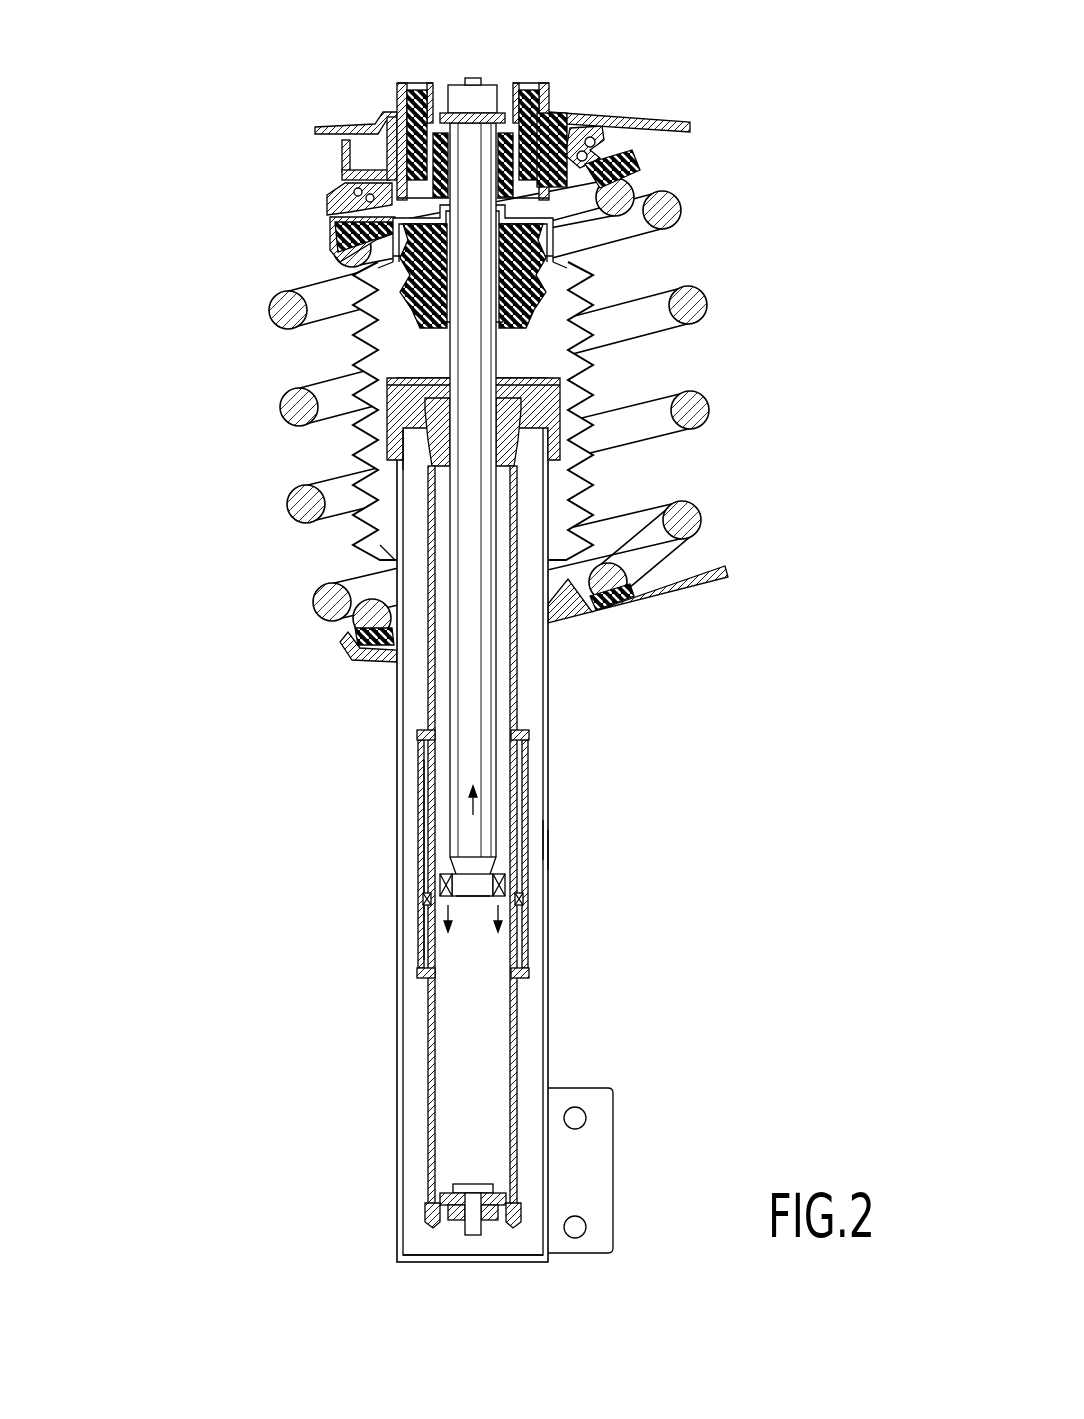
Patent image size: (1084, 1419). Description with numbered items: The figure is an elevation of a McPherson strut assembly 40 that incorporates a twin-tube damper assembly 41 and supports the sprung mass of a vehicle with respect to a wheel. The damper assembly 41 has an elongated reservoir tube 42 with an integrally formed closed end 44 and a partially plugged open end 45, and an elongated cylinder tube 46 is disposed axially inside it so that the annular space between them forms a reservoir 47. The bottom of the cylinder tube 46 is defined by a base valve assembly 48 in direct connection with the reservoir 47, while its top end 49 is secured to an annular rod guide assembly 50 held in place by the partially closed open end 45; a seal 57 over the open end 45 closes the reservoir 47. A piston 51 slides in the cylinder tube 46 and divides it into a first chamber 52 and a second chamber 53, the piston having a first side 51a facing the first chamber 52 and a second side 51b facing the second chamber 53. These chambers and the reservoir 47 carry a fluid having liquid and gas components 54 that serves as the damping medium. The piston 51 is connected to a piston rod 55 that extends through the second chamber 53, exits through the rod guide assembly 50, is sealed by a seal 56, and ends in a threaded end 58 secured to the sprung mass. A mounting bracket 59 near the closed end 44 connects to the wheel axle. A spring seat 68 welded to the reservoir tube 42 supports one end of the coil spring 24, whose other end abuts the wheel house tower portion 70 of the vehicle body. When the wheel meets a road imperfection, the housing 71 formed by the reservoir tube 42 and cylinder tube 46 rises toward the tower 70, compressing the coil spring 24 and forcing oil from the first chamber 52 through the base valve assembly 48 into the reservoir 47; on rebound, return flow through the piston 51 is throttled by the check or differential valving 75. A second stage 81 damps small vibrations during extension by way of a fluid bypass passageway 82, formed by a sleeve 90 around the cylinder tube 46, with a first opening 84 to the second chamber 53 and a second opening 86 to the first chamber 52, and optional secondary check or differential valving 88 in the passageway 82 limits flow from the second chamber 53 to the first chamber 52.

The coil spring 24 is at (705, 302).
The McPherson strut assembly 40 is at (343, 328).
The twin-tube damper assembly 41 is at (562, 850).
The reservoir tube 42 is at (548, 840).
The closed end 44 is at (440, 1262).
The open end 45 is at (410, 437).
The cylinder tube 46 is at (513, 645).
The reservoir 47 is at (413, 660).
The base valve assembly 48 is at (430, 1215).
The top end 49 is at (520, 455).
The rod guide assembly 50 is at (520, 432).
The piston 51 is at (470, 905).
The first side 51a is at (445, 905).
The second side 51b is at (440, 880).
The first chamber 52 is at (492, 1021).
The second chamber 53 is at (500, 792).
The fluid having liquid and gas components 54 is at (530, 1150).
The piston rod 55 is at (468, 268).
The seal 56 is at (443, 420).
The seal 57 is at (555, 388).
The threaded end 58 is at (480, 78).
The mounting bracket 59 is at (592, 1105).
The spring seat 68 is at (690, 595).
The wheel house tower portion 70 is at (648, 122).
The housing 71 is at (382, 548).
The check or differential valving 75 is at (437, 885).
The second stage 81 is at (412, 788).
The fluid bypass passageway 82 is at (520, 900).
The first opening 84 is at (428, 742).
The second opening 86 is at (420, 975).
The secondary check or differential valving 88 is at (425, 897).
The sleeve 90 is at (421, 818).